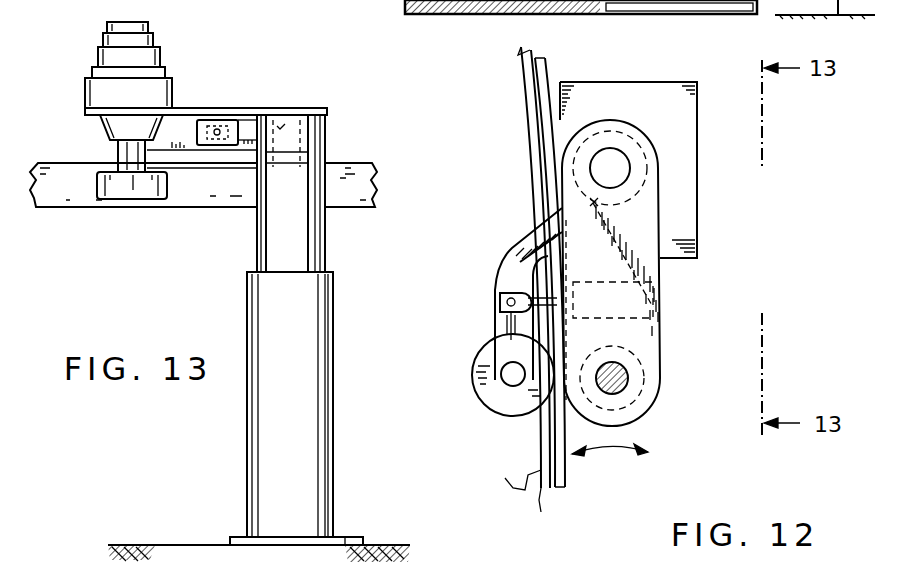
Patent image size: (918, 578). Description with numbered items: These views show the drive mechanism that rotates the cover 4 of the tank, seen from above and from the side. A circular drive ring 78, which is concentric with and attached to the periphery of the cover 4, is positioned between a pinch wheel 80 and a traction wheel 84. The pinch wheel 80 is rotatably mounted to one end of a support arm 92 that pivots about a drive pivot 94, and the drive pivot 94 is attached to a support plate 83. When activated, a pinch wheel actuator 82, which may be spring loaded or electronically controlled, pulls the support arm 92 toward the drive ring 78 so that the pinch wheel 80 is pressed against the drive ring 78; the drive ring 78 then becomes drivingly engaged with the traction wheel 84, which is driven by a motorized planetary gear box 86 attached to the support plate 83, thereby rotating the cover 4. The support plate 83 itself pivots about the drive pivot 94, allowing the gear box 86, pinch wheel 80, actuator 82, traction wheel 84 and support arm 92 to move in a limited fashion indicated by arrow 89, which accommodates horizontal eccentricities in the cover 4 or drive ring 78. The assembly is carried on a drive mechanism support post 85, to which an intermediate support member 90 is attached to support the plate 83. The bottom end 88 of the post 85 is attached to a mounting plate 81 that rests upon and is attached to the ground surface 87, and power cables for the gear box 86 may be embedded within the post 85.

In FIG. 12, the cover 4 is at (518, 63).
In FIG. 13, the drive ring 78 is at (68, 190).
In FIG. 12, the drive ring 78 is at (543, 80).
In FIG. 12, the pinch wheel 80 is at (487, 358).
In FIG. 13, the mounting plate 81 is at (345, 543).
In FIG. 13, the pinch wheel actuator 82 is at (218, 128).
In FIG. 12, the pinch wheel actuator 82 is at (665, 297).
In FIG. 13, the support plate 83 is at (268, 110).
In FIG. 12, the support plate 83 is at (640, 228).
In FIG. 13, the traction wheel 84 is at (133, 190).
In FIG. 12, the traction wheel 84 is at (658, 394).
In FIG. 13, the drive mechanism support post 85 is at (268, 317).
In FIG. 13, the motorized planetary gear box 86 is at (173, 88).
In FIG. 13, the ground surface 87 is at (135, 545).
In FIG. 13, the bottom end of post 88 is at (280, 527).
In FIG. 12, the bottom end of post 88 is at (690, 170).
In FIG. 12, the arrow 89 is at (622, 462).
In FIG. 13, the intermediate support member 90 is at (303, 232).
In FIG. 13, the support arm 92 is at (108, 155).
In FIG. 12, the support arm 92 is at (522, 243).
In FIG. 13, the drive pivot 94 is at (290, 118).
In FIG. 12, the drive pivot 94 is at (608, 165).